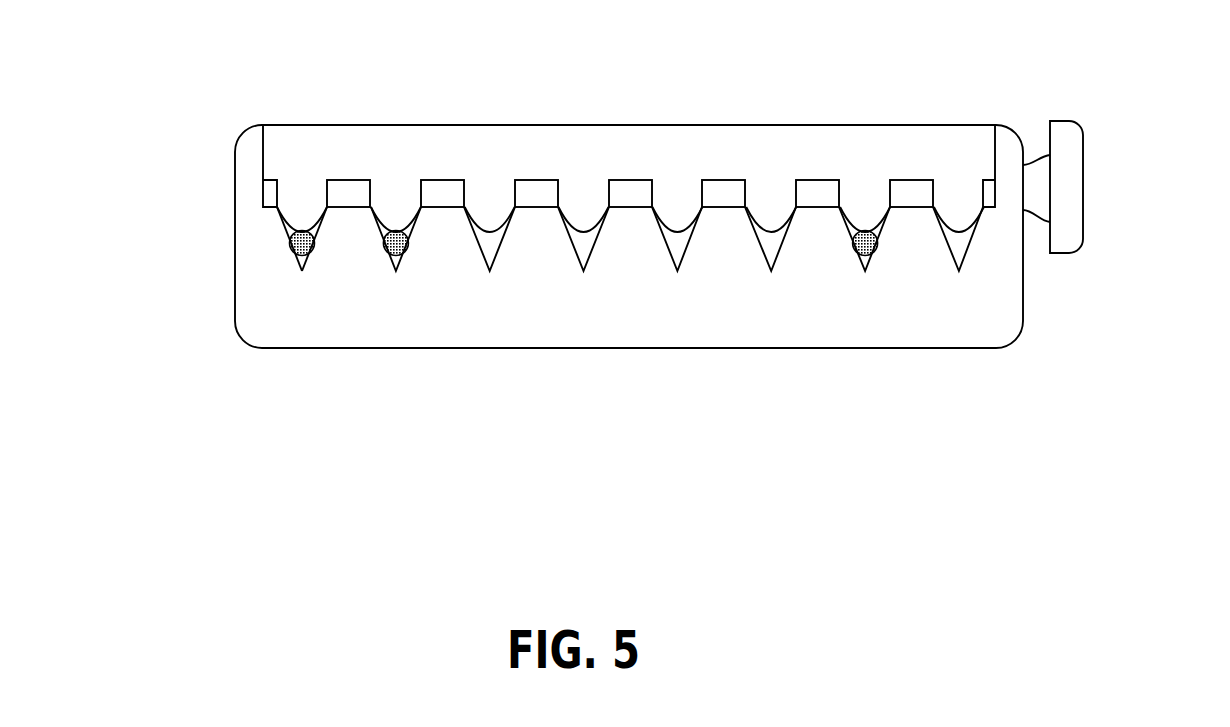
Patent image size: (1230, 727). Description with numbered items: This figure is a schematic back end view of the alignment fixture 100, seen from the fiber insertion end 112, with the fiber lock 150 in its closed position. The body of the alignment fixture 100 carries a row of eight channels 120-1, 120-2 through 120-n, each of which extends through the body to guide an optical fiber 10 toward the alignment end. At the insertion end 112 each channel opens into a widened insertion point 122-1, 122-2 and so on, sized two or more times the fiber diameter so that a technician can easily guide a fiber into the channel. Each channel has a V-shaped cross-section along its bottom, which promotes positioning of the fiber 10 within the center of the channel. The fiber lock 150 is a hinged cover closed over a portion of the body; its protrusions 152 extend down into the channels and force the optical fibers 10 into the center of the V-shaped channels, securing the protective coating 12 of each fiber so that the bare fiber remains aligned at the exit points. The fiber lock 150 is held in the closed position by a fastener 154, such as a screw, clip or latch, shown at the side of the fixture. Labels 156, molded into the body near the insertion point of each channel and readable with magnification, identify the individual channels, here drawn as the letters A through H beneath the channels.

The alignment fixture 100 is at (230, 102).
The optical fiber 10 is at (289, 266).
The protective coating 12 is at (293, 250).
The fiber lock 150 is at (760, 130).
The protrusions 152 is at (370, 192).
The insertion point 122-1 is at (277, 224).
The insertion point 122-2 is at (430, 227).
The channel 120-1 is at (277, 242).
The channel 120-2 is at (374, 250).
The channel 120-n is at (977, 240).
The labels 156 is at (499, 329).
The fiber insertion end 112 is at (1003, 137).
The fastener 154 is at (1073, 134).